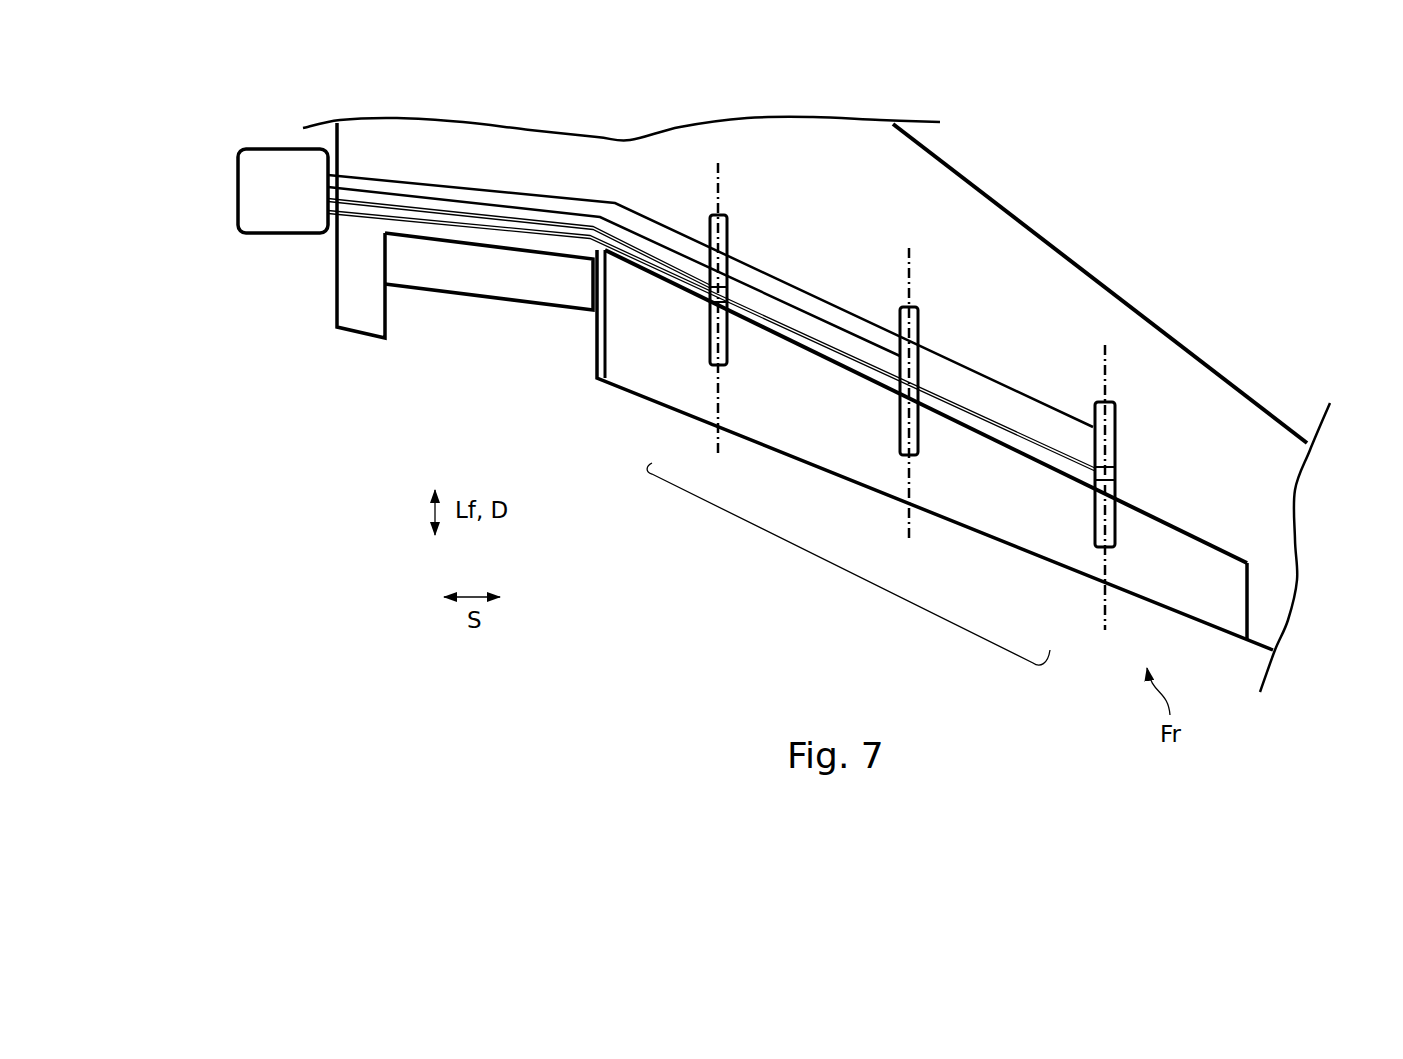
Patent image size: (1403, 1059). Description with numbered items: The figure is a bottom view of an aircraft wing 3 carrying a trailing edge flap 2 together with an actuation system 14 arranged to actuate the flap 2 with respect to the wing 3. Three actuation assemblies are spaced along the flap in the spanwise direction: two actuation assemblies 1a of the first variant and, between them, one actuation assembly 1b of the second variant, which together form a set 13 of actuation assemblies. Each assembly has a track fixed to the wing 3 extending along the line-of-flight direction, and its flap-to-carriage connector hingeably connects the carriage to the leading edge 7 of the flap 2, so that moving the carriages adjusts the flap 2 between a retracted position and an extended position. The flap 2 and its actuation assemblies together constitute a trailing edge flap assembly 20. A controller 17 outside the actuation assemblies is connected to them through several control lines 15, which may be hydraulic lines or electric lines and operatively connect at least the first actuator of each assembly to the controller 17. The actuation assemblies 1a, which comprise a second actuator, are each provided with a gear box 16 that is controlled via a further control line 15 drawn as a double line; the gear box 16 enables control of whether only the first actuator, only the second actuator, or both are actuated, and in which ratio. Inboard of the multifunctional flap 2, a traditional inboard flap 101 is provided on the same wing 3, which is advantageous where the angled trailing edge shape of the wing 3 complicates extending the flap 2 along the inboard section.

The actuation assembly 1a is at (705, 387).
The actuation assembly 1b is at (901, 478).
The trailing edge flap 2 is at (1177, 597).
The aircraft wing 3 is at (1027, 270).
The leading edge 7 is at (1198, 524).
The set of actuation assemblies 13 is at (848, 564).
The actuation system 14 is at (312, 503).
The control lines 15 is at (410, 182).
The gear box 16 is at (727, 297).
The controller 17 is at (262, 217).
The trailing edge flap assembly 20 is at (722, 618).
The inboard flap 101 is at (477, 280).